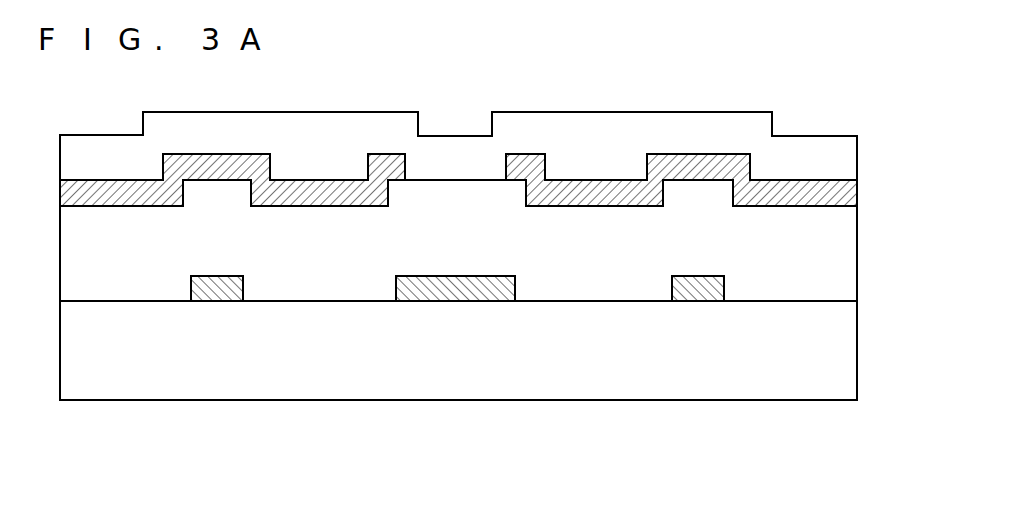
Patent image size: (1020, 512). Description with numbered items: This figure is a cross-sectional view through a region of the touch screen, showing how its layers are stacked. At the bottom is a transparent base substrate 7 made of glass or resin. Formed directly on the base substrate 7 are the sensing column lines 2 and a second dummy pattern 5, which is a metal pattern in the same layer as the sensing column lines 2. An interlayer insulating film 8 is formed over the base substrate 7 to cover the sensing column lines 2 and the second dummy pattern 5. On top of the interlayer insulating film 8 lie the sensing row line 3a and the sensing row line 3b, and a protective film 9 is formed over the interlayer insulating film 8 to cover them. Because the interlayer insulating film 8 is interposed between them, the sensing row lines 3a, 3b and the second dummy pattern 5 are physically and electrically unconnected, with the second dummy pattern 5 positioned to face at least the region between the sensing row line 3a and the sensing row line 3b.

The sensing column lines 2 is at (698, 300).
The second dummy pattern 5 is at (447, 300).
The base substrate 7 is at (842, 363).
The interlayer insulating film 8 is at (842, 252).
The protective film 9 is at (842, 153).
The sensing row line 3a is at (845, 197).
The sensing row line 3b is at (73, 195).